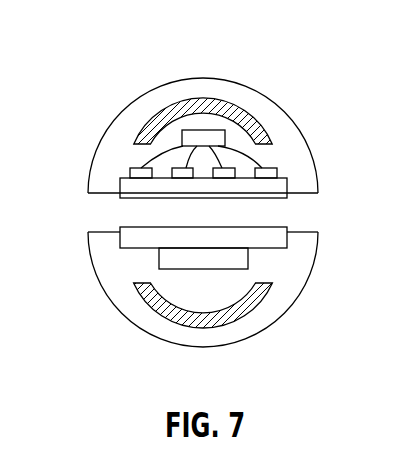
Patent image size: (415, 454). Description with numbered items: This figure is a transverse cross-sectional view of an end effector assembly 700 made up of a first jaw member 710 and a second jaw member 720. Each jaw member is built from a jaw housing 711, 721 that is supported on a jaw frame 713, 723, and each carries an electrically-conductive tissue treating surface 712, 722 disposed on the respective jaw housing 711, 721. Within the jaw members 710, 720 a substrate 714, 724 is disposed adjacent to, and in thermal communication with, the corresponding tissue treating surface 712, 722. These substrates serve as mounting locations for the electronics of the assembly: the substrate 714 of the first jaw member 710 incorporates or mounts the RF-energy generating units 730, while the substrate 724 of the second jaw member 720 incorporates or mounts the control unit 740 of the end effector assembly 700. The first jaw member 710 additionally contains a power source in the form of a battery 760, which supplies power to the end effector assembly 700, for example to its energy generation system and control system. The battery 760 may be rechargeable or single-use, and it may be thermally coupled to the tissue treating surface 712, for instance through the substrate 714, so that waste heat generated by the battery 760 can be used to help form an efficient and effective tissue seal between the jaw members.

The end effector assembly 700 is at (252, 35).
The first jaw member 710 is at (154, 73).
The jaw housing 711 is at (293, 137).
The tissue treating surface 712 is at (268, 200).
The jaw frame 713 is at (237, 121).
The substrate 714 is at (177, 193).
The second jaw member 720 is at (137, 346).
The jaw housing 721 is at (292, 300).
The tissue treating surface 722 is at (140, 227).
The jaw frame 723 is at (237, 313).
The substrate 724 is at (277, 242).
The RF-energy generating units 730 is at (147, 175).
The control unit 740 is at (170, 257).
The battery 760 is at (195, 138).